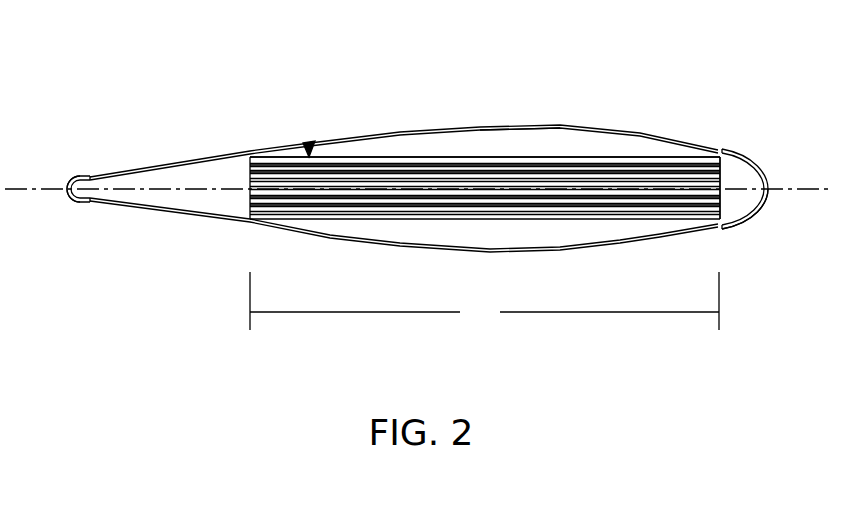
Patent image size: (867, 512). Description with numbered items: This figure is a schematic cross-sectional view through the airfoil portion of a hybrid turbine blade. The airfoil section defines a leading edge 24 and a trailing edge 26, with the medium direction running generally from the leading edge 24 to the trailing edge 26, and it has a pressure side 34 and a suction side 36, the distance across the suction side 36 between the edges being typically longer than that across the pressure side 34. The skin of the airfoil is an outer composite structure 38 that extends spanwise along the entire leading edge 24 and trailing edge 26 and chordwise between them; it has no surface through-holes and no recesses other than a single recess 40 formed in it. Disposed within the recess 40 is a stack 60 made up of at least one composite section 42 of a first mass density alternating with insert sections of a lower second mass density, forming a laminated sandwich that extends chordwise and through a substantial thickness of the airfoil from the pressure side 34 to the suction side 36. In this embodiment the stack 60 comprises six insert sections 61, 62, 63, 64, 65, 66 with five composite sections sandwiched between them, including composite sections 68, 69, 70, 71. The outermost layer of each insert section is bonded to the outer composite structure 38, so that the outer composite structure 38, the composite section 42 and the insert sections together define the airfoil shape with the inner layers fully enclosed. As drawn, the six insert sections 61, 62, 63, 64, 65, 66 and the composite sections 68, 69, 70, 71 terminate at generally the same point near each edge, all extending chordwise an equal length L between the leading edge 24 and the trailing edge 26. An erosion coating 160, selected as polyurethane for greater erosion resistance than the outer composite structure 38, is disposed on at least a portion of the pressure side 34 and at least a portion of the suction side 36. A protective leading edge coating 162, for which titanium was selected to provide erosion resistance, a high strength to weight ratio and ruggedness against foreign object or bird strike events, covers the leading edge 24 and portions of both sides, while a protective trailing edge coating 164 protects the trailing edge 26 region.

The leading edge 24 is at (757, 205).
The trailing edge 26 is at (86, 202).
The pressure side 34 is at (392, 249).
The suction side 36 is at (416, 128).
The outer composite structure 38 is at (515, 142).
The recess 40 is at (573, 158).
The composite section 42 is at (624, 166).
The stack 60 is at (307, 142).
The insert section 61 is at (273, 163).
The insert section 62 is at (247, 172).
The insert section 63 is at (247, 183).
The insert section 64 is at (250, 198).
The insert section 65 is at (280, 207).
The insert section 66 is at (327, 217).
The composite section 68 is at (666, 172).
The composite section 69 is at (704, 162).
The composite section 70 is at (629, 205).
The composite section 71 is at (677, 207).
The erosion coating 160 is at (595, 254).
The protective leading edge coating 162 is at (760, 173).
The protective trailing edge coating 164 is at (83, 176).